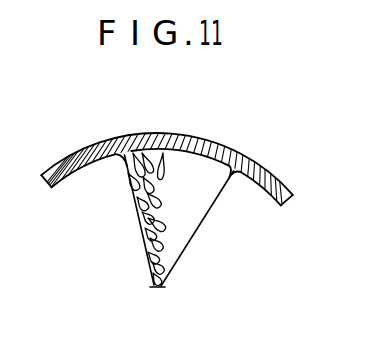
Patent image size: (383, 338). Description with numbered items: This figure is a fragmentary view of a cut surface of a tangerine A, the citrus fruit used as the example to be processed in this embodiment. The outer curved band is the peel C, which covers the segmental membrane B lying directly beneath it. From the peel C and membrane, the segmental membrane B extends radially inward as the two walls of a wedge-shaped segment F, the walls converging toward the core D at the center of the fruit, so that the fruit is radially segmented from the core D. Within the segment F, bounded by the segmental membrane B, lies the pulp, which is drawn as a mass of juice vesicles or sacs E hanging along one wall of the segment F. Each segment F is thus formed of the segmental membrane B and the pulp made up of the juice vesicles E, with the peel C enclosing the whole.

The tangerine A is at (183, 144).
The segmental membrane B is at (247, 168).
The peel C is at (292, 188).
The core D is at (162, 288).
The juice vesicles E is at (128, 178).
The segments F is at (176, 192).